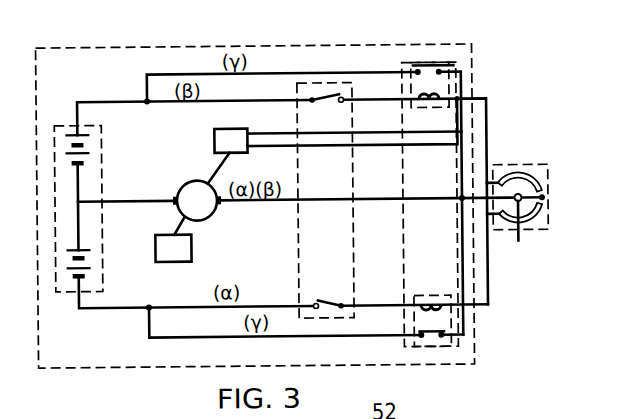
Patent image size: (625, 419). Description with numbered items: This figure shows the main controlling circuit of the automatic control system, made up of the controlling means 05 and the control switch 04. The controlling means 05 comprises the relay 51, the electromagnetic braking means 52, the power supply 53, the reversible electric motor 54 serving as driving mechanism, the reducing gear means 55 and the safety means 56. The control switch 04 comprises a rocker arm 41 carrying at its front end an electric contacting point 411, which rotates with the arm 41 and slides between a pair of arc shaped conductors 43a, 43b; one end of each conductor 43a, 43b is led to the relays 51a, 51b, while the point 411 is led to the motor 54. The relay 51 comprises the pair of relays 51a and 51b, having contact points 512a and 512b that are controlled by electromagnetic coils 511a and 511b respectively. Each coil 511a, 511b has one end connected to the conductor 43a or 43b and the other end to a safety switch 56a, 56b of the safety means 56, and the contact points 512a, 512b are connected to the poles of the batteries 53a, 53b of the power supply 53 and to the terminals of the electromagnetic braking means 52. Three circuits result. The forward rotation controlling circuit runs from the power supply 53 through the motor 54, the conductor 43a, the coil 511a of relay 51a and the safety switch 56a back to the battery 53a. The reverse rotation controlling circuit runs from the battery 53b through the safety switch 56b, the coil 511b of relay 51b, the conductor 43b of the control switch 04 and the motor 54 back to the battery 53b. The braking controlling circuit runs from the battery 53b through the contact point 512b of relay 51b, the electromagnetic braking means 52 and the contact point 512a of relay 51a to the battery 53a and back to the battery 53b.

The controlling means 05 is at (205, 46).
The control switch 04 is at (544, 197).
The rocker arm 41 is at (513, 230).
The electric contacting point 411 is at (546, 200).
The arc shaped conductor 43a is at (541, 212).
The arc shaped conductor 43b is at (541, 185).
The relay 51 is at (442, 69).
The relay 51a is at (425, 328).
The relay 51b is at (419, 63).
The electromagnetic coil 511a is at (430, 300).
The electromagnetic coil 511b is at (427, 106).
The contact point 512a is at (424, 342).
The contact point 512b is at (458, 67).
The electromagnetic braking means 52 is at (229, 128).
The power supply 53 is at (78, 208).
The power supply 53a is at (103, 265).
The power supply 53b is at (103, 149).
The reversible electric motor 54 is at (190, 186).
The reducing gear means 55 is at (176, 262).
The safety means 56 is at (326, 181).
The safety switch 56a is at (319, 302).
The safety switch 56b is at (319, 102).